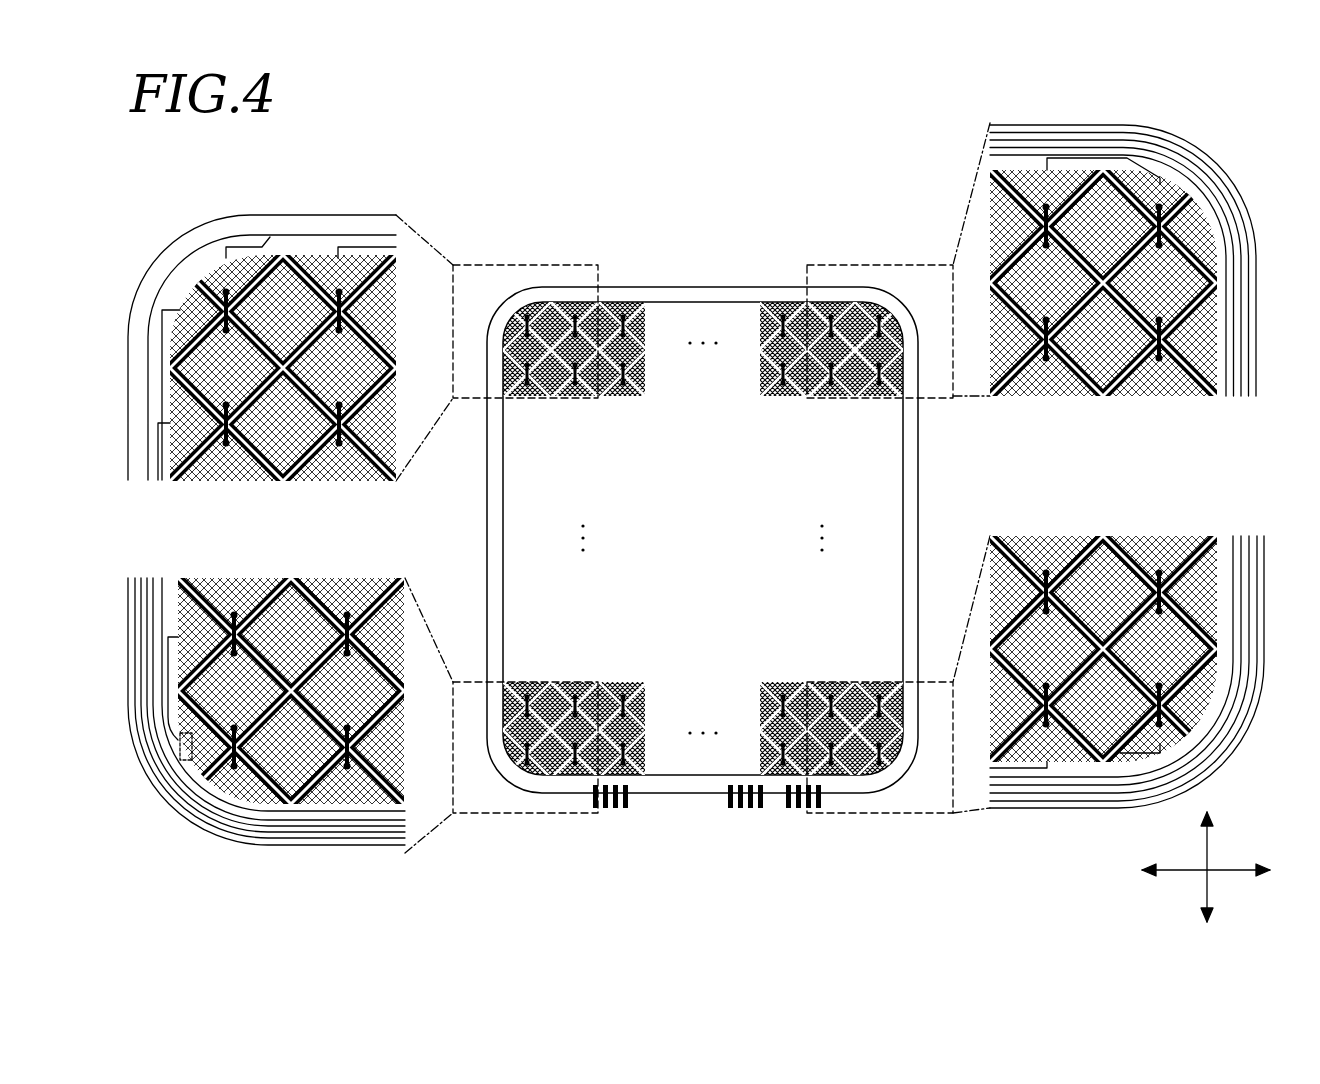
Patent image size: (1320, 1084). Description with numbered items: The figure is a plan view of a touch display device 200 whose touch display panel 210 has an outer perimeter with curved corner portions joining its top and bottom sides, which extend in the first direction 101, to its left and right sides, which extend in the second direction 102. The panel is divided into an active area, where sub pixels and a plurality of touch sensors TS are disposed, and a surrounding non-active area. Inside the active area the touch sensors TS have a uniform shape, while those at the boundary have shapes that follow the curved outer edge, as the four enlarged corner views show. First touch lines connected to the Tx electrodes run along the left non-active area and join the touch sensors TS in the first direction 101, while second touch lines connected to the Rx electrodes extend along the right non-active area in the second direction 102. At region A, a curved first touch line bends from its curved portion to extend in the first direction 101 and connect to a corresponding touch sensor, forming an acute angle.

The touch display device 200 is at (451, 105).
The touch display panel 210 is at (625, 287).
The touch sensor TS is at (780, 303).
The region A is at (180, 748).
The first direction 101 is at (1247, 860).
The second direction 102 is at (1200, 848).